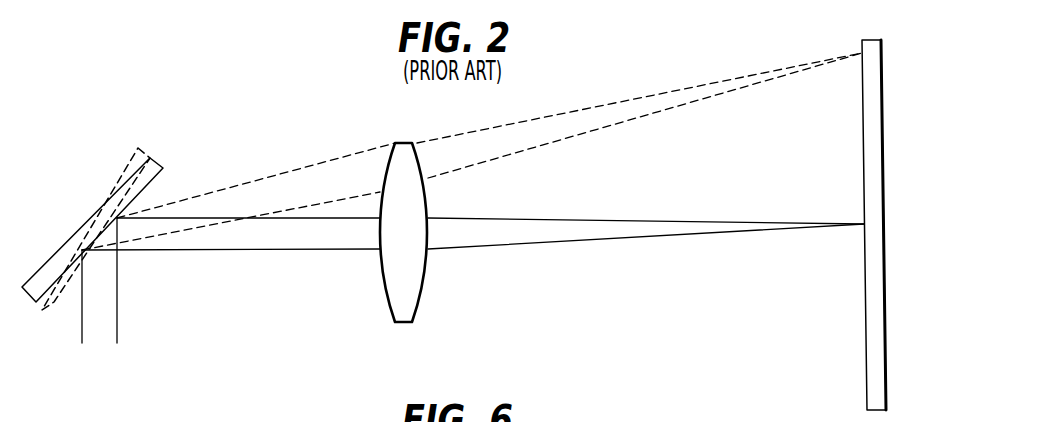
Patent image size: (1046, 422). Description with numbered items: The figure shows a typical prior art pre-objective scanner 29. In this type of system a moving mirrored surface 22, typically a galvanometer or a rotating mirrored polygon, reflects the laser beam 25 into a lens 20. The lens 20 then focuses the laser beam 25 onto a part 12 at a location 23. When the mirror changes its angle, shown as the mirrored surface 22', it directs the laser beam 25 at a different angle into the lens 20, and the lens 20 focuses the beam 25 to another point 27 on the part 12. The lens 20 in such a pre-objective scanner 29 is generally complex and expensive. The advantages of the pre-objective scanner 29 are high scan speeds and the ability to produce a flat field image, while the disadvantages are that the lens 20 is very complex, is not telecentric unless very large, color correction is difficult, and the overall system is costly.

The part 12 is at (862, 177).
The lens 20 is at (427, 280).
The mirrored surface 22 is at (127, 212).
The mirrored surface at changed angle 22' is at (216, 267).
The location 23 is at (858, 236).
The laser beam 25 is at (118, 306).
The point 27 is at (856, 64).
The pre-objective scanner 29 is at (300, 337).